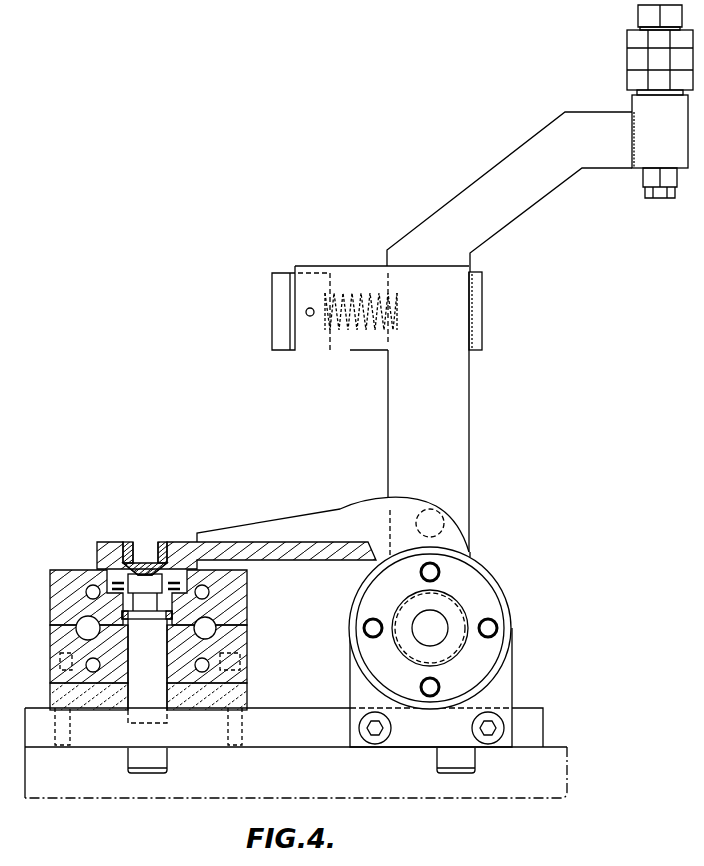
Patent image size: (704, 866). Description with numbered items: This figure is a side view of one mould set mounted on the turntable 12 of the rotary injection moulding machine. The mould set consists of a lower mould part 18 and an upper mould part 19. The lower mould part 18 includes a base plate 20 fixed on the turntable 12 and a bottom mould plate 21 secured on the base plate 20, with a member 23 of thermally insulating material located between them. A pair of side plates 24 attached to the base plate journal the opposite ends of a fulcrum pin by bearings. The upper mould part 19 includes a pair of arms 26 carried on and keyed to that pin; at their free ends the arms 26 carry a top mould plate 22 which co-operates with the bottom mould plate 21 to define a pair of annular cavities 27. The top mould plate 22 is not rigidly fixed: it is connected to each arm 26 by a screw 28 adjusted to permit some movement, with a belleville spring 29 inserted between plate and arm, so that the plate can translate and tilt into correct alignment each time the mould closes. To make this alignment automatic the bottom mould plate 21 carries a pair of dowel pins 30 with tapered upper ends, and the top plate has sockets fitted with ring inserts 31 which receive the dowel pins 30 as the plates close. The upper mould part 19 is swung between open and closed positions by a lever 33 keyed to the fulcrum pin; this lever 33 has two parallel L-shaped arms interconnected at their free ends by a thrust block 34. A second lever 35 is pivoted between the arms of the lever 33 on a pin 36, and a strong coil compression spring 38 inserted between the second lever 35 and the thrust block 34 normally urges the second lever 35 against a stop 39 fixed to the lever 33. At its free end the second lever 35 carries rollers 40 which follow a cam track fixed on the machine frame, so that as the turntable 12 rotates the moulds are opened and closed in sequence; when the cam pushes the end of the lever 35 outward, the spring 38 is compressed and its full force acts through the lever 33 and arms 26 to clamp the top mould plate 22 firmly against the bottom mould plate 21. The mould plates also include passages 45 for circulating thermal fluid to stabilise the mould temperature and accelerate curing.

The turntable 12 is at (43, 790).
The lower mould part 18 is at (268, 688).
The upper mould part 19 is at (76, 550).
The base plate 20 is at (88, 748).
The bottom mould plate 21 is at (58, 632).
The top mould plate 22 is at (58, 606).
The member of thermally insulating material 23 is at (58, 690).
The side plates 24 is at (500, 681).
The arms 26 is at (250, 541).
The annular cavities 27 is at (205, 622).
The screw 28 is at (165, 542).
The belleville spring 29 is at (120, 565).
The dowel pins 30 is at (152, 648).
The ring inserts 31 is at (173, 614).
The lever 33 is at (448, 440).
The thrust block 34 is at (272, 314).
The second lever 35 is at (508, 203).
The pin 36 is at (457, 518).
The coil compression spring 38 is at (358, 333).
The stop 39 is at (487, 318).
The rollers 40 is at (632, 61).
The passages 45 is at (86, 592).